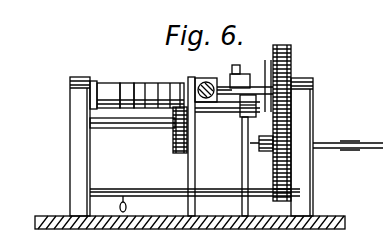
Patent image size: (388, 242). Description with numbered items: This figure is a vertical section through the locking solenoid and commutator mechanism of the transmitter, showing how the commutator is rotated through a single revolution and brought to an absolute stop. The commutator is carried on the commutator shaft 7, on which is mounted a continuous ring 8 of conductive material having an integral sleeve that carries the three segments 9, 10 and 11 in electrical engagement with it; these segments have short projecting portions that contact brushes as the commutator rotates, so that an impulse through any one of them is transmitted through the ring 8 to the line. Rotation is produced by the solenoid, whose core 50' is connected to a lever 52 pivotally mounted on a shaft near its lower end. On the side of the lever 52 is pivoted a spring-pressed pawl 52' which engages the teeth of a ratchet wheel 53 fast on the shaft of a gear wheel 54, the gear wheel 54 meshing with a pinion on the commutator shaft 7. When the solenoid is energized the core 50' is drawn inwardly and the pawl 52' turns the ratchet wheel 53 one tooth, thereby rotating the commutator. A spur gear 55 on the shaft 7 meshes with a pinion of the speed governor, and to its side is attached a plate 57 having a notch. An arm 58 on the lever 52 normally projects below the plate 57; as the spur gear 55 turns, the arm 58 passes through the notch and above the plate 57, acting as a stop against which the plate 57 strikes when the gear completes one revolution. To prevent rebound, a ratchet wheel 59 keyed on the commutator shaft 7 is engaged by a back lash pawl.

The commutator shaft 7 is at (253, 107).
The continuous ring 8 is at (139, 84).
The segment 9 is at (99, 85).
The segment 10 is at (113, 84).
The segment 11 is at (127, 84).
The solenoid core 50' is at (227, 84).
The lever 52 is at (206, 146).
The spring-pressed pawl 52' is at (172, 148).
The ratchet wheel 53 is at (173, 140).
The gear wheel 54 is at (291, 67).
The spur gear 55 is at (270, 48).
The plate 57 is at (300, 77).
The arm 58 is at (241, 144).
The ratchet wheel 59 is at (266, 70).